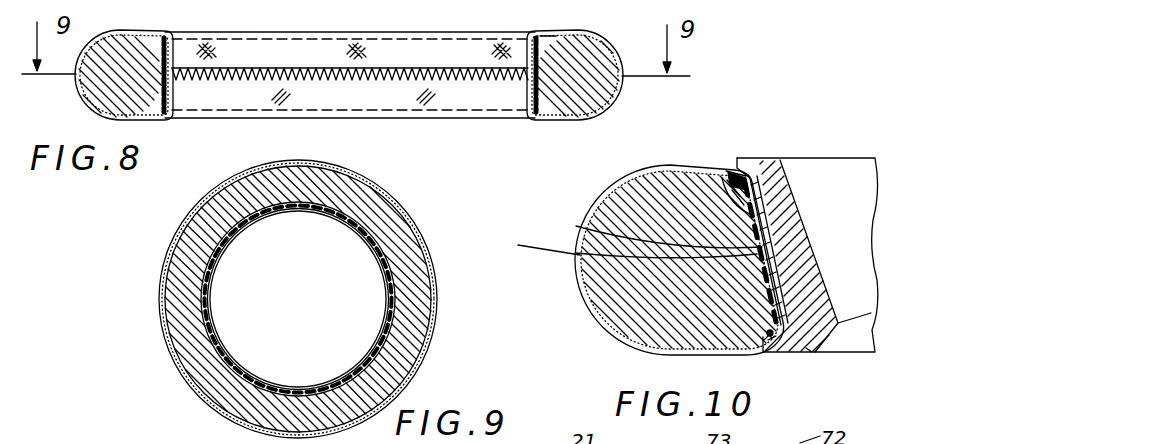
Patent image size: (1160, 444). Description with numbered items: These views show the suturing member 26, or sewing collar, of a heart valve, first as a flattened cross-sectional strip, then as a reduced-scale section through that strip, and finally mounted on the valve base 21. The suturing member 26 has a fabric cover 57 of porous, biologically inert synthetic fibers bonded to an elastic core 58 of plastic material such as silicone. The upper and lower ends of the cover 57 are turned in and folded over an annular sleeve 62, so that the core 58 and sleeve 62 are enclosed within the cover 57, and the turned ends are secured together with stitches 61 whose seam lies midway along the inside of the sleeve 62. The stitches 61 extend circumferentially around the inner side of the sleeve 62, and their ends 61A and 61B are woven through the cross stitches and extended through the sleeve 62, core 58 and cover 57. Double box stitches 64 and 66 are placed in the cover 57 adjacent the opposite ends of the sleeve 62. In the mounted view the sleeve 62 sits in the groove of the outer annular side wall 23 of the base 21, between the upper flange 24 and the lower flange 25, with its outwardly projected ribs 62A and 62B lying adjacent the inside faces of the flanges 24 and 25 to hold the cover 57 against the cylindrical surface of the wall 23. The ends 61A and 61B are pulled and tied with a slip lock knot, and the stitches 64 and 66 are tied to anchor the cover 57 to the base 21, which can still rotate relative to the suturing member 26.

In FIG. 10, the base 21 is at (802, 152).
In FIG. 10, the outer annular side wall 23 is at (786, 212).
In FIG. 10, the upper outwardly directed annular flange 24 is at (743, 163).
In FIG. 10, the lower outwardly directed annular flange 25 is at (770, 342).
In FIG. 9, the suturing member 26 is at (148, 266).
In FIG. 8, the cover 57 is at (609, 45).
In FIG. 9, the cover 57 is at (420, 232).
In FIG. 10, the cover 57 is at (583, 306).
In FIG. 8, the elastic core 58 is at (606, 98).
In FIG. 9, the elastic core 58 is at (416, 281).
In FIG. 10, the elastic core 58 is at (612, 203).
In FIG. 8, the stitches 61 is at (385, 77).
In FIG. 9, the stitches 61 is at (387, 281).
In FIG. 10, the stitches 61 is at (762, 253).
In FIG. 8, the end of stitches 61A is at (245, 67).
In FIG. 10, the end of stitches 61A is at (586, 232).
In FIG. 10, the end of stitches 61B is at (562, 256).
In FIG. 8, the sleeve 62 is at (536, 62).
In FIG. 9, the sleeve 62 is at (393, 318).
In FIG. 10, the sleeve 62 is at (724, 182).
In FIG. 8, the rib 62A is at (548, 38).
In FIG. 10, the rib 62A is at (736, 170).
In FIG. 10, the rib 62B is at (771, 336).
In FIG. 8, the double box stitches 64 is at (456, 40).
In FIG. 10, the double box stitches 64 is at (759, 178).
In FIG. 8, the double box stitches 66 is at (491, 112).
In FIG. 10, the double box stitches 66 is at (807, 349).